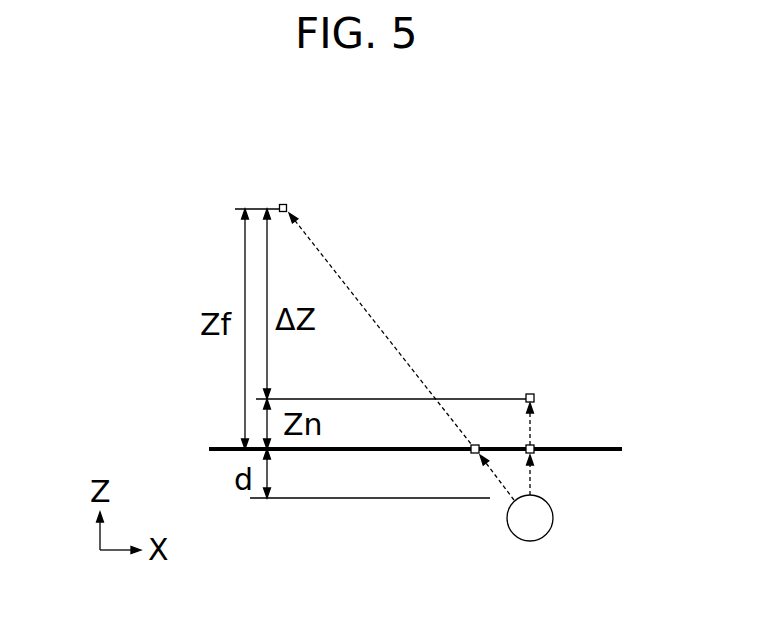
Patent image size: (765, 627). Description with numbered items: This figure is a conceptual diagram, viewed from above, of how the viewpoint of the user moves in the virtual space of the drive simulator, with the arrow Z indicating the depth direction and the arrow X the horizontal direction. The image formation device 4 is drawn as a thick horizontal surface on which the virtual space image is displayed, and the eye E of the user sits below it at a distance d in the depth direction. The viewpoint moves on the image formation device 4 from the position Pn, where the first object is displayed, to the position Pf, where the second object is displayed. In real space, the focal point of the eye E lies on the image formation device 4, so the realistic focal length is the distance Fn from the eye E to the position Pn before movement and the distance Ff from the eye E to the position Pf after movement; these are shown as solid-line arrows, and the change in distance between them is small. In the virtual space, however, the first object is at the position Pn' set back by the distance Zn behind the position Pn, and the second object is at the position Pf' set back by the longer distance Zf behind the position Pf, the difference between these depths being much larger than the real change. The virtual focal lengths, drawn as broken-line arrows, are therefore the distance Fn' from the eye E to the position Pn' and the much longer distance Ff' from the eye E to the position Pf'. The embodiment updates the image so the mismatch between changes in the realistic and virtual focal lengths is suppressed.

The image formation device 4 is at (226, 447).
The eye E is at (536, 540).
The position of movement-destination viewpoint Pf is at (443, 471).
The position of point-before-movement viewpoint Pn is at (573, 471).
The virtual position of second object Pf' is at (304, 180).
The virtual position of first object Pn' is at (576, 365).
The realistic focal length at movement destination Ff is at (487, 508).
The realistic focal length before movement Fn is at (573, 503).
The virtual focal length at movement destination Ff' is at (382, 331).
The virtual focal length before movement Fn' is at (576, 414).